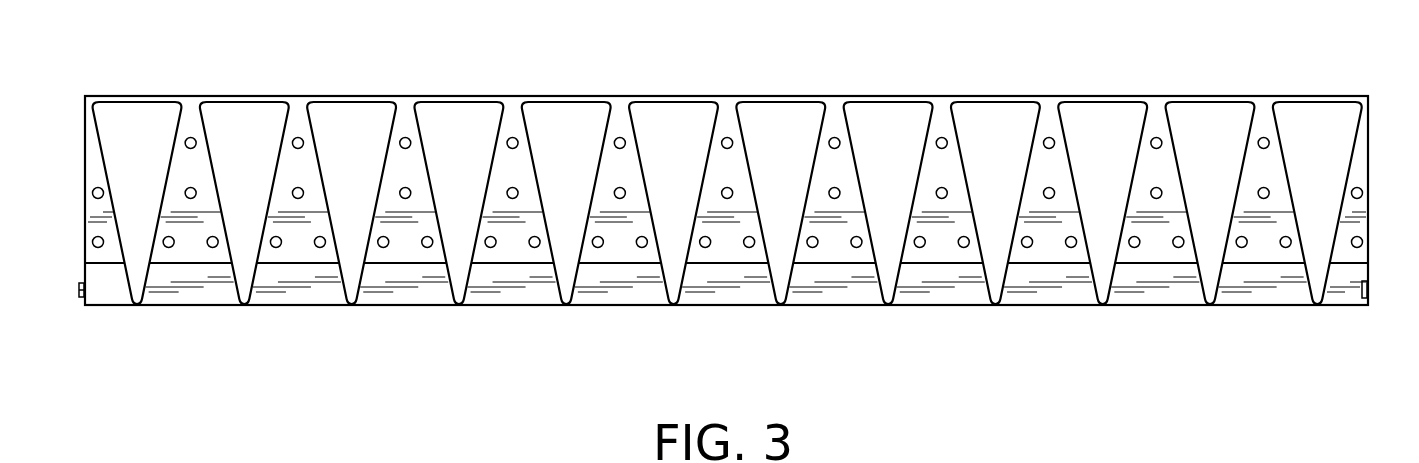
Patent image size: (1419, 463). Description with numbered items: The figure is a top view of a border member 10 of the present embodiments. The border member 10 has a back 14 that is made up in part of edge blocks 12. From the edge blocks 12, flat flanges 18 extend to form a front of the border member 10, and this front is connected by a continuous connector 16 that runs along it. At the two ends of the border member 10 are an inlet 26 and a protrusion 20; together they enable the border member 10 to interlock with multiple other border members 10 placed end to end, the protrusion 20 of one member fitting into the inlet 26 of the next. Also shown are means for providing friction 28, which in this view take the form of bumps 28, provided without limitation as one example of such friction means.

The border member 10 is at (1097, 65).
The edge blocks 12 is at (510, 307).
The back 14 is at (673, 305).
The continuous connector 16 is at (783, 97).
The flat flanges 18 is at (840, 173).
The protrusion 20 is at (78, 296).
The inlet 26 is at (1368, 292).
The means for providing friction 28 is at (293, 298).